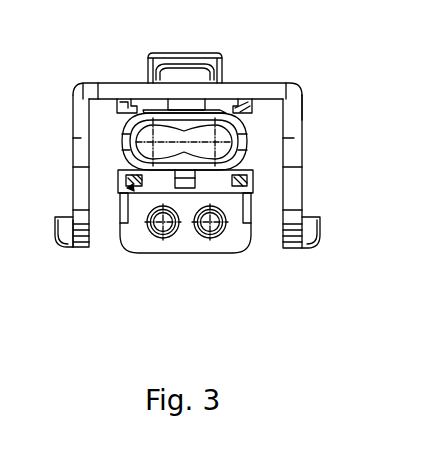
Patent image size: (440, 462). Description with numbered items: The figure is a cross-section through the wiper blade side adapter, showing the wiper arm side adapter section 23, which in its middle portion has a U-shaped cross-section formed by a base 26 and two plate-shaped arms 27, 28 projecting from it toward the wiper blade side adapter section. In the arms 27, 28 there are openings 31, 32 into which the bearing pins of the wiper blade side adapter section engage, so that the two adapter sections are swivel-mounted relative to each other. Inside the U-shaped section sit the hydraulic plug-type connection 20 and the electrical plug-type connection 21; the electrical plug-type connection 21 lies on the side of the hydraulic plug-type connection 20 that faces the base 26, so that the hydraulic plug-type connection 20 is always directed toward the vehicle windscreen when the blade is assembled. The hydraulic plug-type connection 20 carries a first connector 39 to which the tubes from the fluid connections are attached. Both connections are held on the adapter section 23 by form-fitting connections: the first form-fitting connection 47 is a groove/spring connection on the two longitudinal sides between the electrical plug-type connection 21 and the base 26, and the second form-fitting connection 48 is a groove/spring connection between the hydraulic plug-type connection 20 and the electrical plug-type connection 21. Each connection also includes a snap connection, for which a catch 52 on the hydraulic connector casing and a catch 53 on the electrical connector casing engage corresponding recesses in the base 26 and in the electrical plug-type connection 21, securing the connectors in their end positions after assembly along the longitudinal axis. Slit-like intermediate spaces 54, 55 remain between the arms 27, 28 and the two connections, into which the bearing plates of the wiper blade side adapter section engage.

The hydraulic plug-type connection 20 is at (219, 246).
The electrical plug-type connection 21 is at (237, 109).
The wiper arm side adapter section 23 is at (303, 105).
The base 26 is at (233, 91).
The arm 27 is at (296, 203).
The arm 28 is at (73, 179).
The opening 31 is at (293, 152).
The opening 32 is at (72, 146).
The first connector 39 is at (148, 230).
The first form-fitting connection 47 is at (131, 100).
The second form-fitting connection 48 is at (128, 190).
The catch 52 is at (172, 104).
The catch 53 is at (180, 192).
The slit-like intermediate space 54 is at (266, 218).
The slit-like intermediate space 55 is at (103, 181).